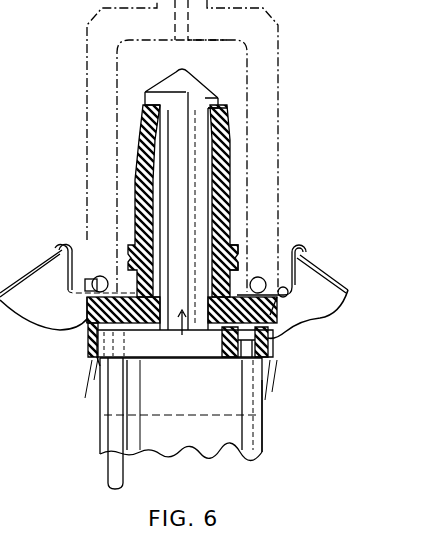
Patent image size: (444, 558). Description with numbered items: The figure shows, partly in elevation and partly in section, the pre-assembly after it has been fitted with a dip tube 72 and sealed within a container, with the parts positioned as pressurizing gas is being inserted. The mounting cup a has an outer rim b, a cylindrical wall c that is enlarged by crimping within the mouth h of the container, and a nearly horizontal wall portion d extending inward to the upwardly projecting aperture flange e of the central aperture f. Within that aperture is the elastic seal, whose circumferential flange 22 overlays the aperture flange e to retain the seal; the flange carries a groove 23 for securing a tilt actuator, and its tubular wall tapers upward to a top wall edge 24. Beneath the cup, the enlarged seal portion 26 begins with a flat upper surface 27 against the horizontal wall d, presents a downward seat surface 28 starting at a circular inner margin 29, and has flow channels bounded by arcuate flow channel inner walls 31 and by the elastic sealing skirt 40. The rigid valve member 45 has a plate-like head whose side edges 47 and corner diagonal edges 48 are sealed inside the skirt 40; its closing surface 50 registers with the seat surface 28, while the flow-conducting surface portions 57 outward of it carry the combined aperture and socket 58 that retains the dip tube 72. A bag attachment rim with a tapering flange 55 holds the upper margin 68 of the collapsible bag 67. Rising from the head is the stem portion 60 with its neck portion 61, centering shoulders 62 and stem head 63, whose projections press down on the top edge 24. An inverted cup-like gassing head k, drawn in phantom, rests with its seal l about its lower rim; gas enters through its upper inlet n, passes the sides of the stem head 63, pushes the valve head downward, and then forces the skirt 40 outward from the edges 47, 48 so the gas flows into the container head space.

The gassing head k is at (280, 48).
The upper inlet n is at (186, 38).
The stem portion 60 is at (190, 150).
The neck portion 61 is at (200, 118).
The stem head 63 is at (168, 86).
The top wall edge 24 is at (228, 105).
The centering shoulders 62 is at (228, 113).
The circumferential flange 22 is at (240, 248).
The groove 23 is at (238, 266).
The valve member 45 is at (182, 327).
The circular inner margin 29 is at (182, 310).
The aperture and socket 58 is at (127, 345).
The seat surface 28 is at (90, 331).
The flow channel inner walls 31 is at (88, 323).
The sealing skirt 40 is at (95, 346).
The corner diagonal edges 48 is at (96, 360).
The valve head closing surface 50 is at (233, 360).
The flow-conducting surface portions 57 is at (268, 338).
The bag 67 is at (262, 451).
The upper margin 68 is at (262, 413).
The tapering flange 55 is at (200, 403).
The side edges 47 is at (170, 360).
The dip tube 72 is at (125, 476).
The flat upper surface 27 is at (92, 307).
The seal l is at (60, 263).
The aperture flange e is at (108, 265).
The central aperture f is at (160, 290).
The outer rim b is at (310, 247).
The mouth h is at (316, 266).
The cylindrical wall c is at (298, 281).
The mounting cup a is at (296, 287).
The horizontal wall portion d is at (297, 298).
The seal portion 26 is at (282, 312).